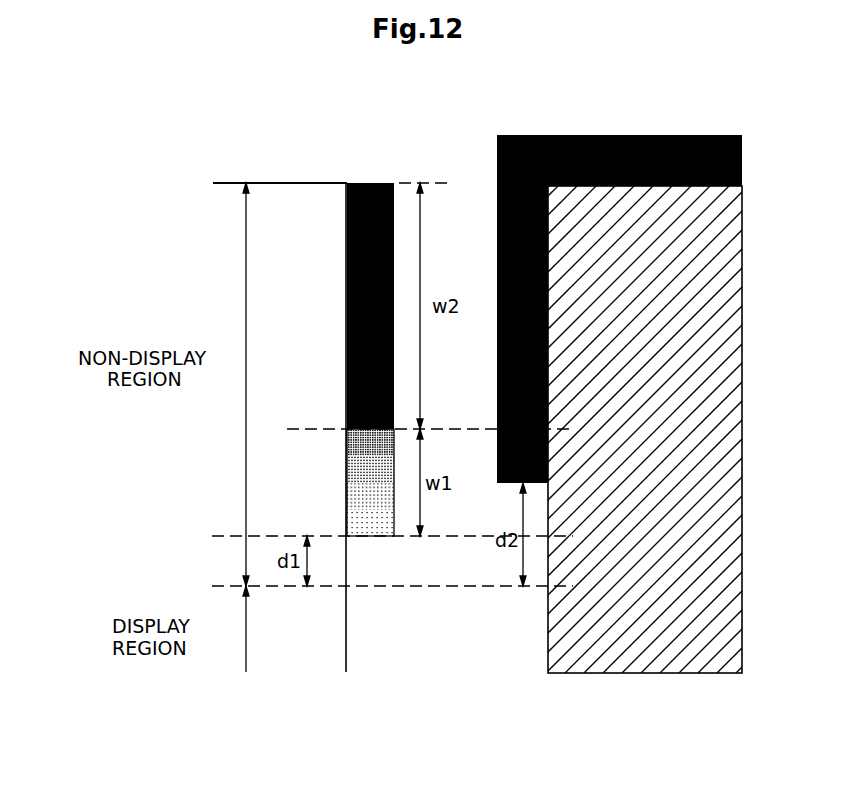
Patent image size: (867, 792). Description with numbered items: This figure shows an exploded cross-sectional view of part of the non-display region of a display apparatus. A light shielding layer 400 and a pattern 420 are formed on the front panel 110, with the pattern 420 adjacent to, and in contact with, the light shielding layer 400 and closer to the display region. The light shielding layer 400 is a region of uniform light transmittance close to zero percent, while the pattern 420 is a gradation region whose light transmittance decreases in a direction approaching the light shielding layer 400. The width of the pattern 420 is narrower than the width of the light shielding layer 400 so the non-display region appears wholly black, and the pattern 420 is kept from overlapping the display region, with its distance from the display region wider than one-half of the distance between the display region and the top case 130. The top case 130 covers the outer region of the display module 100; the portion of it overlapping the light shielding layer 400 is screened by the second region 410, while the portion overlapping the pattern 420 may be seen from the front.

The display module 100 is at (666, 135).
The front panel 110 is at (302, 195).
The top case 130 is at (605, 135).
The light shielding layer 400 is at (395, 182).
The second region 410 is at (347, 311).
The pattern 420 is at (347, 473).